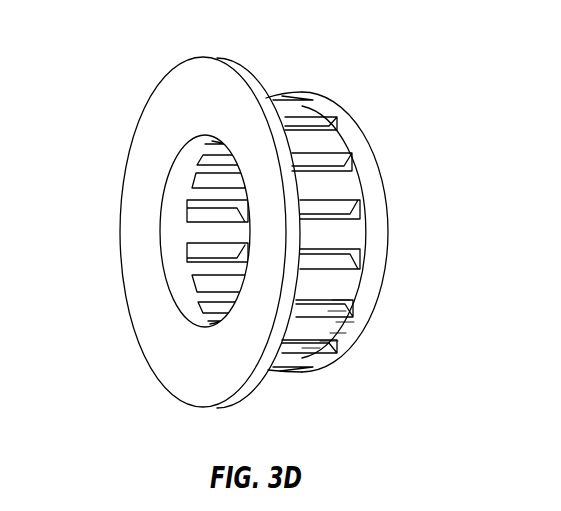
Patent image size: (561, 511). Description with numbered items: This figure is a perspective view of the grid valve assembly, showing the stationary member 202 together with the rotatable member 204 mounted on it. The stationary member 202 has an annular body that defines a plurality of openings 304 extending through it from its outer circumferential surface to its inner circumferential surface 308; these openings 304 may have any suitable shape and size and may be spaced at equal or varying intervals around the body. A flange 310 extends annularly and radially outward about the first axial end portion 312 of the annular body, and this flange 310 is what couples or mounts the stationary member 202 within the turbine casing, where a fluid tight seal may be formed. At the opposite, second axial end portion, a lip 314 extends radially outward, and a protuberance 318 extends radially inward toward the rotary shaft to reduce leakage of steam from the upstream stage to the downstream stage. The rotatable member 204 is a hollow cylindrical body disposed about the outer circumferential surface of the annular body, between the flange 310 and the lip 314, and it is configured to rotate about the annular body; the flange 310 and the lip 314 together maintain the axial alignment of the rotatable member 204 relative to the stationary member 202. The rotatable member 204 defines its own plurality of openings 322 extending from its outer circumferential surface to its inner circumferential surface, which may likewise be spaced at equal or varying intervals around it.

The stationary member 202 is at (100, 266).
The rotatable member 204 is at (314, 80).
The plurality of openings 304 is at (190, 250).
The inner circumferential surface 308 is at (186, 165).
The flange 310 is at (248, 71).
The first axial end portion 312 is at (199, 148).
The lip 314 is at (353, 117).
The protuberance 318 is at (356, 343).
The plurality of openings 322 is at (316, 379).